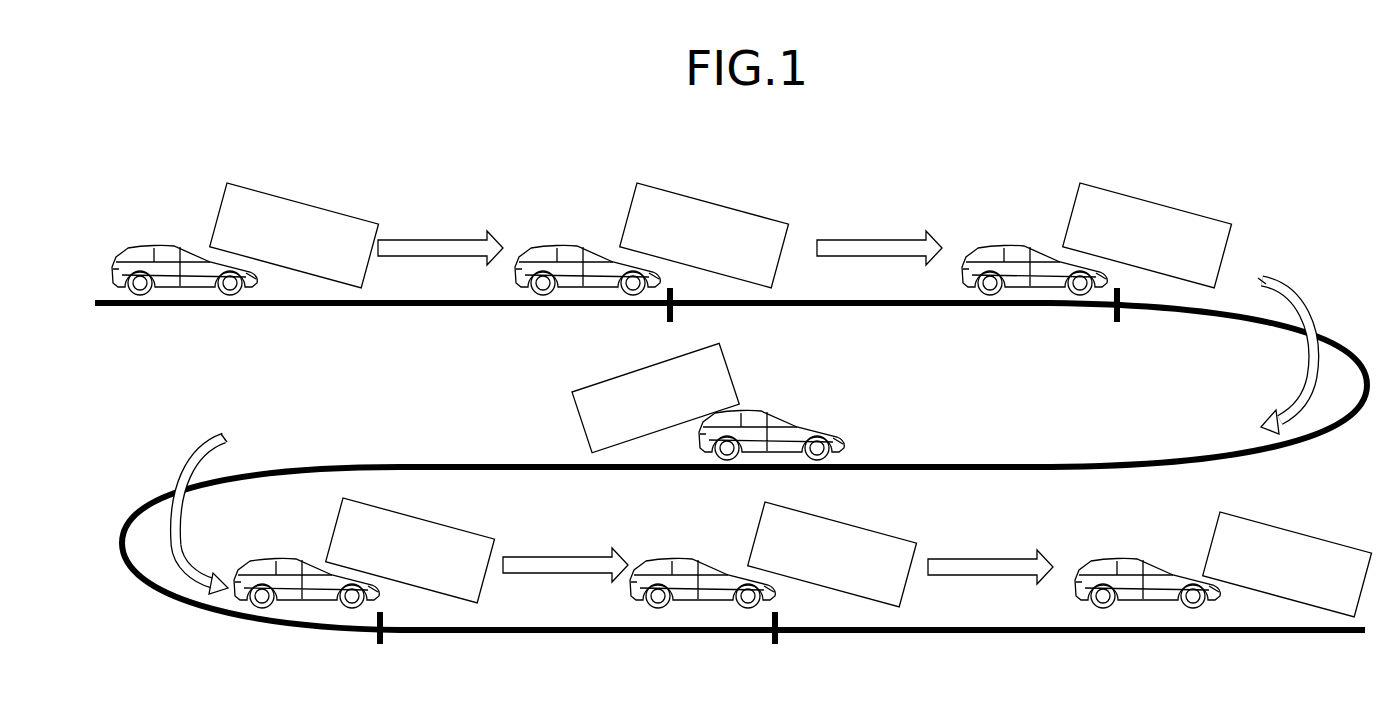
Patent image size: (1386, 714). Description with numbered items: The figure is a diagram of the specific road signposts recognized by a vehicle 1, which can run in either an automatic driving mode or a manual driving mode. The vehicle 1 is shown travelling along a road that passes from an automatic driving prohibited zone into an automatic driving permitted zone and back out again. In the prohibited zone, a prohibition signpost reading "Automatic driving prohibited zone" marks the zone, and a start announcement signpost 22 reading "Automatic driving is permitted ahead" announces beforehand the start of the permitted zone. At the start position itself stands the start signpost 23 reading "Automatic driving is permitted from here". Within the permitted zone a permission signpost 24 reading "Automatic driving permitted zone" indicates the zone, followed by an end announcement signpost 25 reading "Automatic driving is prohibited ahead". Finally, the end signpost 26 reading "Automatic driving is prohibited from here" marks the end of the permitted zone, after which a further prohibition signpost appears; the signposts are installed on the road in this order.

The vehicle 1 is at (177, 228).
The start announcement signpost 22 is at (732, 204).
The start signpost 23 is at (1172, 204).
The permission signpost 24 is at (733, 362).
The end announcement signpost 25 is at (443, 520).
The end signpost 26 is at (862, 523).